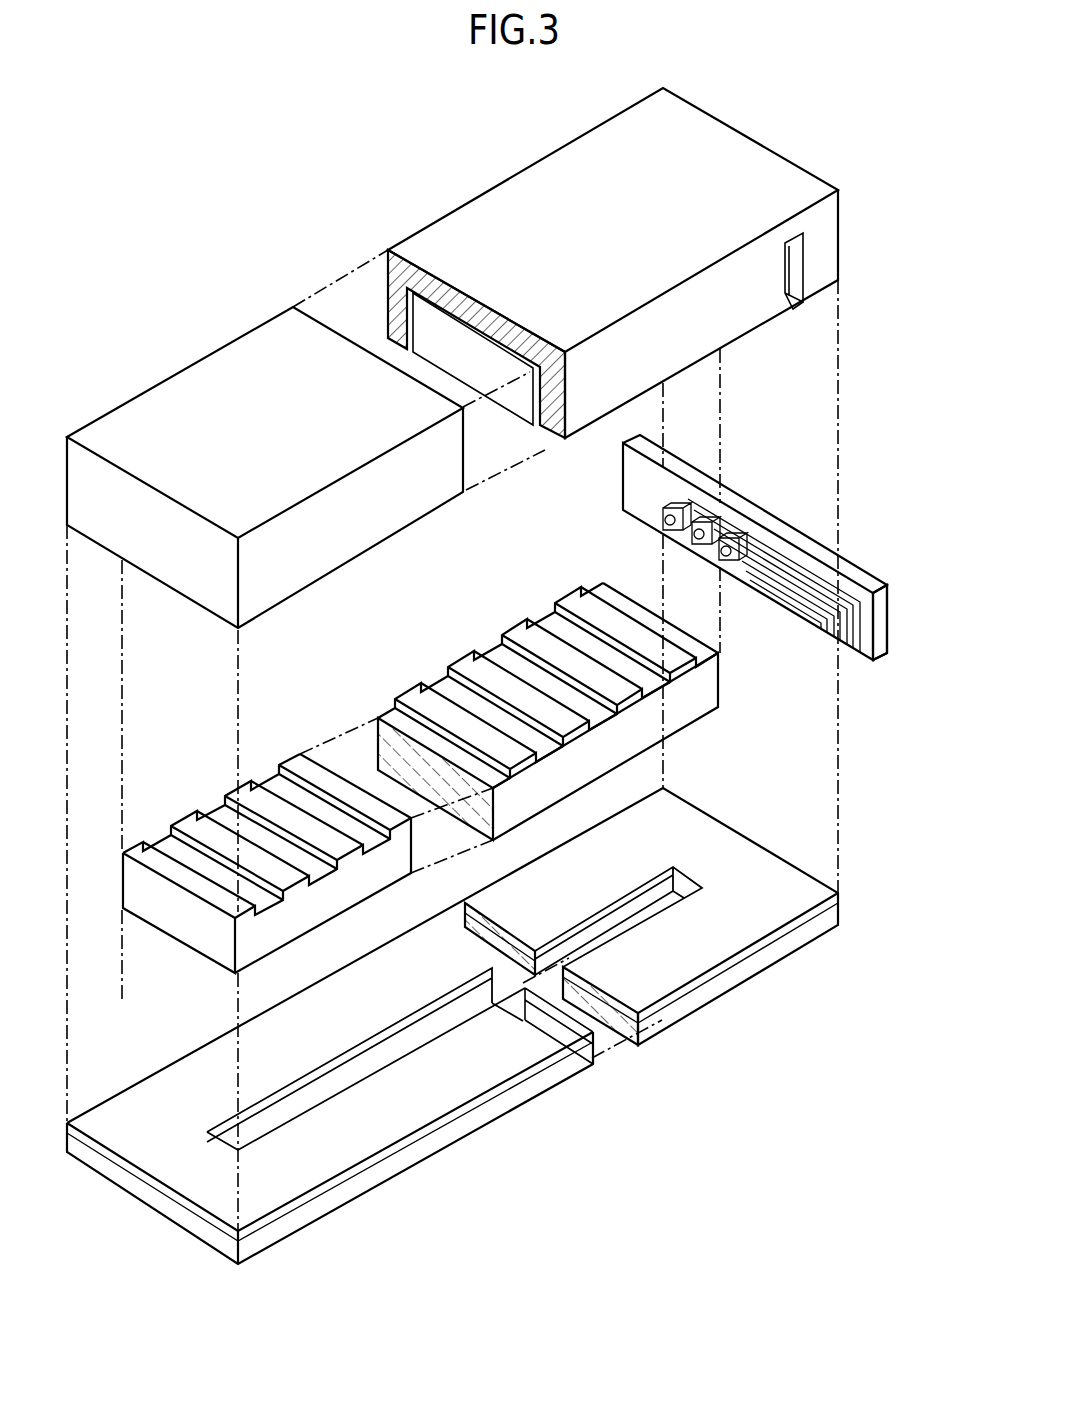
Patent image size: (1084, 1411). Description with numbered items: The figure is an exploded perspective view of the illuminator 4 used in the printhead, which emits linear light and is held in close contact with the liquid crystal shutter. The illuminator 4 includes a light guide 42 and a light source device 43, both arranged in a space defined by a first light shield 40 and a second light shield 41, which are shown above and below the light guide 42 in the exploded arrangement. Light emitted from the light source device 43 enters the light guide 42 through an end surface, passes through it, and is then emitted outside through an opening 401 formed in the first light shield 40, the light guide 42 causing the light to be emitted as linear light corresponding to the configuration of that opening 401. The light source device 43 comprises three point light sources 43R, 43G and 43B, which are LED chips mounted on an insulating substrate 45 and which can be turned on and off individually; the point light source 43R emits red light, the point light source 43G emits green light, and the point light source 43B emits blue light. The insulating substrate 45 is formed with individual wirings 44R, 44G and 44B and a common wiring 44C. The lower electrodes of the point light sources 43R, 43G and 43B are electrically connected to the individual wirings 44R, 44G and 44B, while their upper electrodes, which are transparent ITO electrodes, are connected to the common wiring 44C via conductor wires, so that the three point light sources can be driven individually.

The illuminator 4 is at (862, 409).
The first light shield 40 is at (452, 1026).
The opening 401 is at (590, 937).
The second light shield 41 is at (525, 197).
The light guide 42 is at (458, 652).
The light source device 43 is at (786, 573).
The point light source 43R is at (672, 510).
The point light source 43G is at (706, 522).
The point light source 43B is at (731, 537).
The individual wiring 44R is at (935, 632).
The individual wiring 44G is at (845, 641).
The individual wiring 44B is at (830, 634).
The common wiring 44C is at (773, 597).
The insulating substrate 45 is at (867, 580).